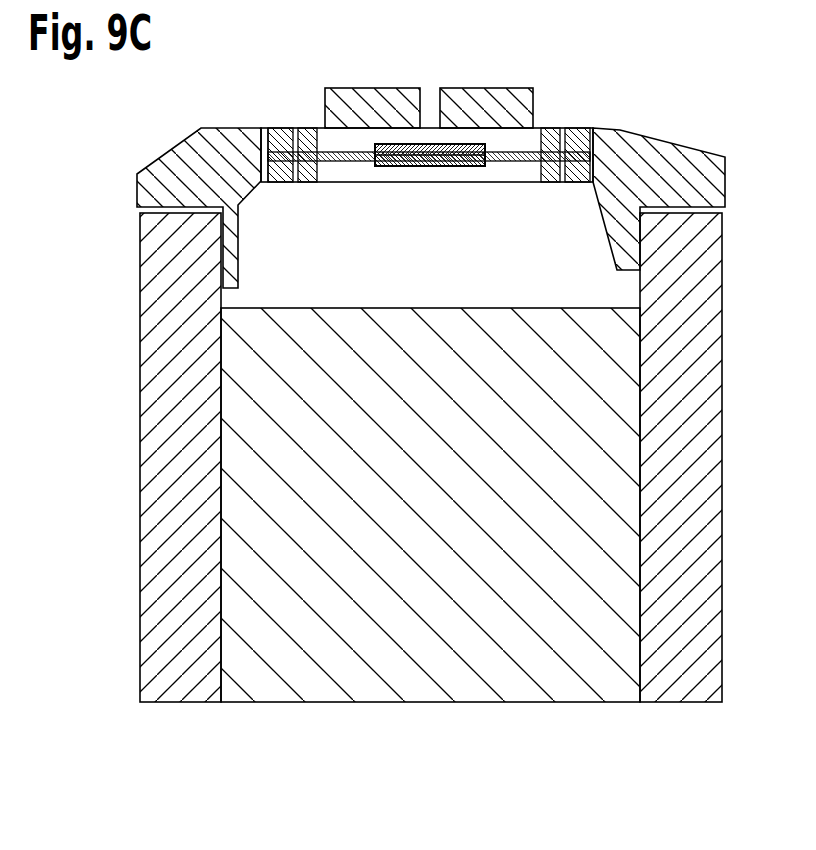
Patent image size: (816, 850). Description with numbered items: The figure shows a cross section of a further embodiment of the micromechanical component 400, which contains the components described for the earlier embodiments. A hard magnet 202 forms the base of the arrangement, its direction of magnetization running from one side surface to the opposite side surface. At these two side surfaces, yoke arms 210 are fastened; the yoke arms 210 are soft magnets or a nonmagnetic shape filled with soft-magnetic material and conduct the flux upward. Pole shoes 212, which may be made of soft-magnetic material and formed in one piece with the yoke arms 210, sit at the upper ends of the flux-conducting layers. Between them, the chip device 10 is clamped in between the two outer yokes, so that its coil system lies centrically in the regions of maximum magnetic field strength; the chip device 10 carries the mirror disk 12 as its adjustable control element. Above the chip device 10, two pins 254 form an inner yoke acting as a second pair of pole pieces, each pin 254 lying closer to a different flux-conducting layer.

The micromechanical component 400 is at (656, 76).
The yoke arm 210 is at (163, 515).
The hard magnet 202 is at (432, 650).
The pole shoe 212 is at (183, 163).
The pin 254 is at (478, 100).
The chip device 10 is at (512, 154).
The mirror disk 12 is at (442, 167).